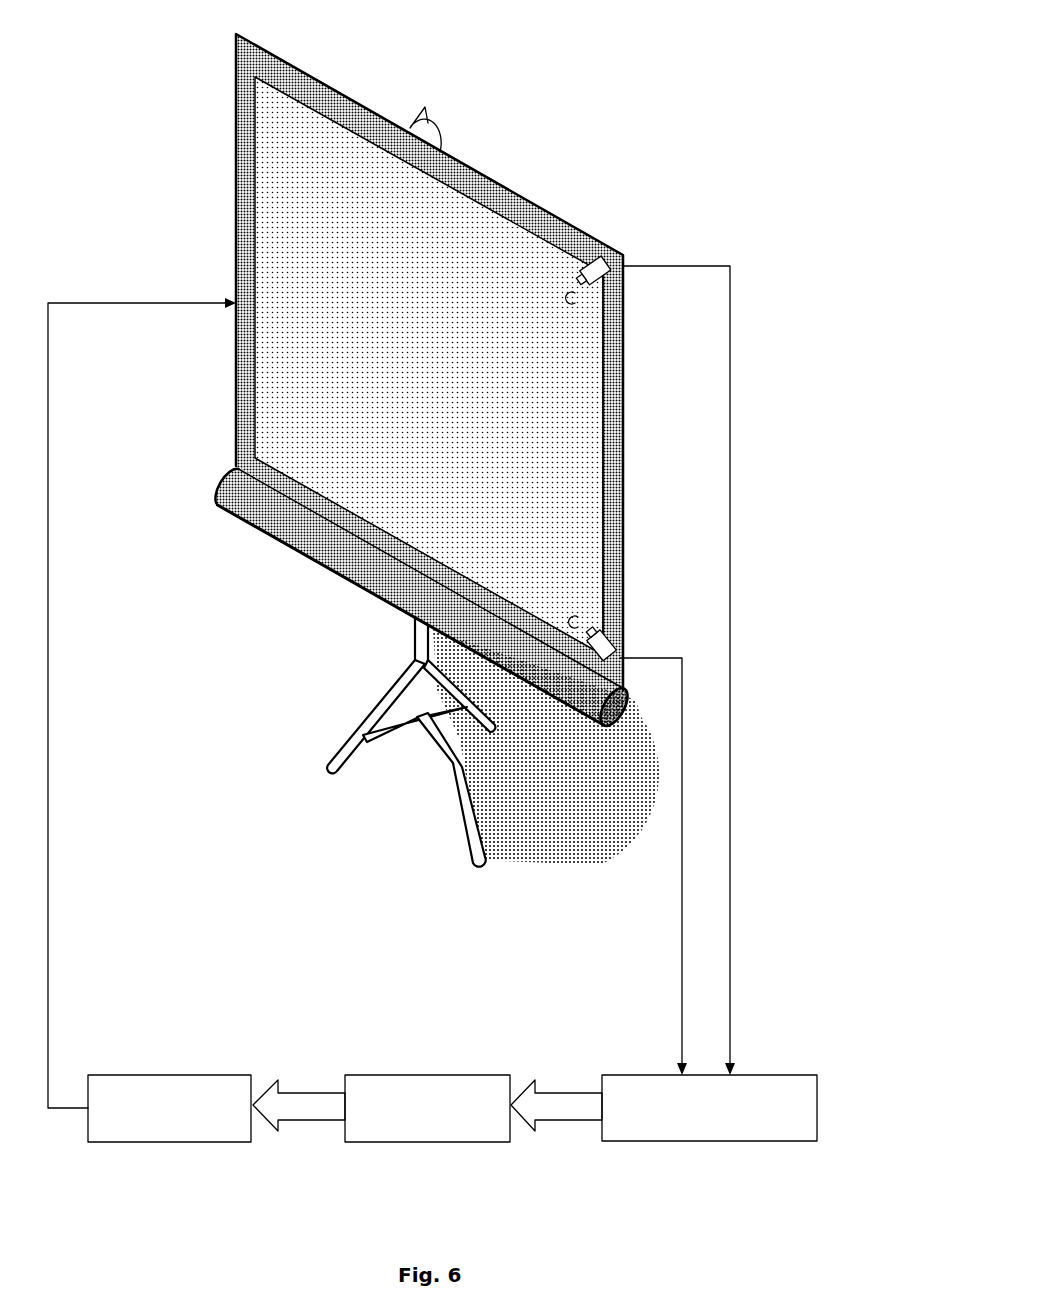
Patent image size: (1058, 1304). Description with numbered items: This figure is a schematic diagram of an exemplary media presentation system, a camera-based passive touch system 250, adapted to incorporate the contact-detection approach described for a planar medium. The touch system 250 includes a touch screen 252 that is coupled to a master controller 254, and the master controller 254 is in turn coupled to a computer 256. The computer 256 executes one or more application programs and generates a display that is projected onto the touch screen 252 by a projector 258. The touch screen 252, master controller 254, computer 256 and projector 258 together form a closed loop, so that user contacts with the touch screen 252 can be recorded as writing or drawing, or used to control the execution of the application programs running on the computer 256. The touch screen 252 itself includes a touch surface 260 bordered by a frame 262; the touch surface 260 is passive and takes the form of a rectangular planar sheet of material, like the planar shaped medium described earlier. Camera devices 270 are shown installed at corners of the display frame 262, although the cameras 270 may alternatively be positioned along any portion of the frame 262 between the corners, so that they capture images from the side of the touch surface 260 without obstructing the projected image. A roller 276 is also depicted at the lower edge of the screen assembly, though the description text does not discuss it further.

The camera-based touch system 250 is at (546, 111).
The touch screen 252 is at (566, 212).
The master controller 254 is at (712, 1141).
The computer 256 is at (410, 1142).
The projector 258 is at (173, 1142).
The touch surface 260 is at (429, 366).
The frame 262 is at (612, 352).
The camera devices 270 is at (550, 300).
The roller 276 is at (377, 540).